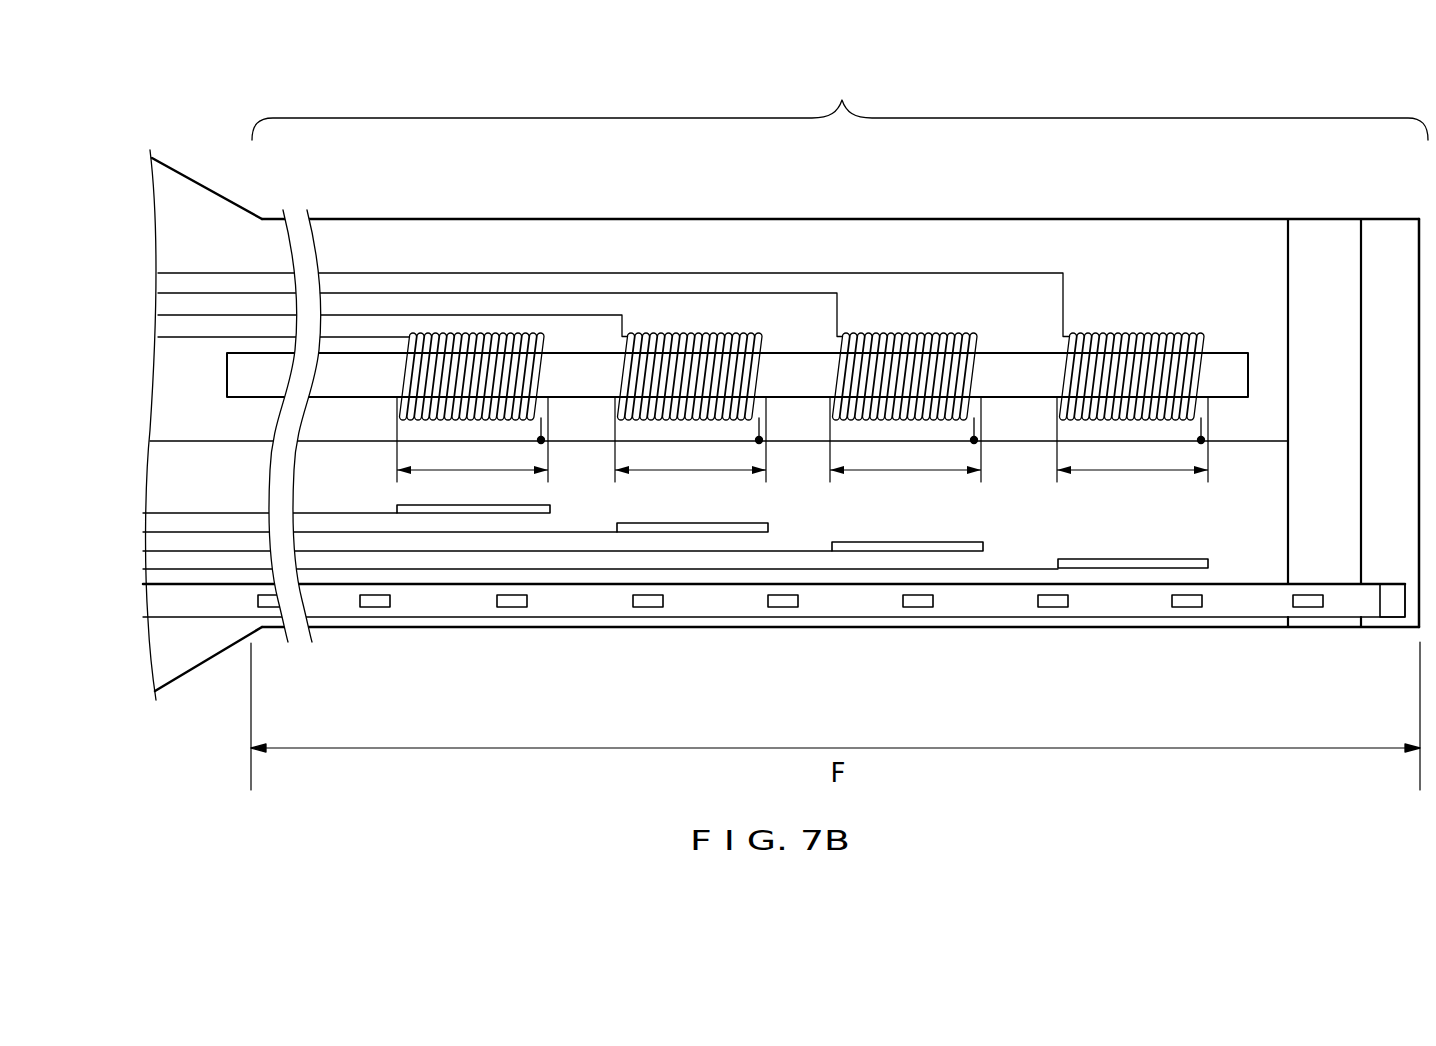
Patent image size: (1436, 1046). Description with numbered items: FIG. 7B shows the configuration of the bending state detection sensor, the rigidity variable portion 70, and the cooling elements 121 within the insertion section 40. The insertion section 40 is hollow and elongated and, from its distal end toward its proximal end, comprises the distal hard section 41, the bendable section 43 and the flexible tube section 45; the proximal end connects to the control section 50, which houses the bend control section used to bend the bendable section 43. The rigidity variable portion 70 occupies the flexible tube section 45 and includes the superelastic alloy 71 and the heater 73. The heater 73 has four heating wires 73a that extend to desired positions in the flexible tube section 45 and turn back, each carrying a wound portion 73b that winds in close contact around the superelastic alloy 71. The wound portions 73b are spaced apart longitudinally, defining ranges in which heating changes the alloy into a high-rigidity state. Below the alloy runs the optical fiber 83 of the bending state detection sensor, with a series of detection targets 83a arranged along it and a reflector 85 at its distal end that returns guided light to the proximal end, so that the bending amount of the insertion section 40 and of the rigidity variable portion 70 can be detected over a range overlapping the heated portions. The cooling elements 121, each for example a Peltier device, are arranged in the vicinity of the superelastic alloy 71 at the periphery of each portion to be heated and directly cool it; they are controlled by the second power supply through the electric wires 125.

The insertion section 40 is at (840, 104).
The distal hard section 41 is at (1386, 228).
The bendable section 43 is at (1327, 228).
The flexible tube section 45 is at (612, 228).
The control section 50 is at (202, 188).
The rigidity variable portion 70 is at (785, 384).
The superelastic alloy 71 is at (1248, 372).
The heater 73 is at (614, 280).
The heating wires 73a is at (350, 336).
The wound portion 73b is at (442, 432).
The optical fiber 83 is at (774, 646).
The detection targets 83a is at (273, 608).
The reflector 85 is at (1393, 605).
The cooling elements 121 is at (550, 506).
The electric wires 125 is at (160, 569).